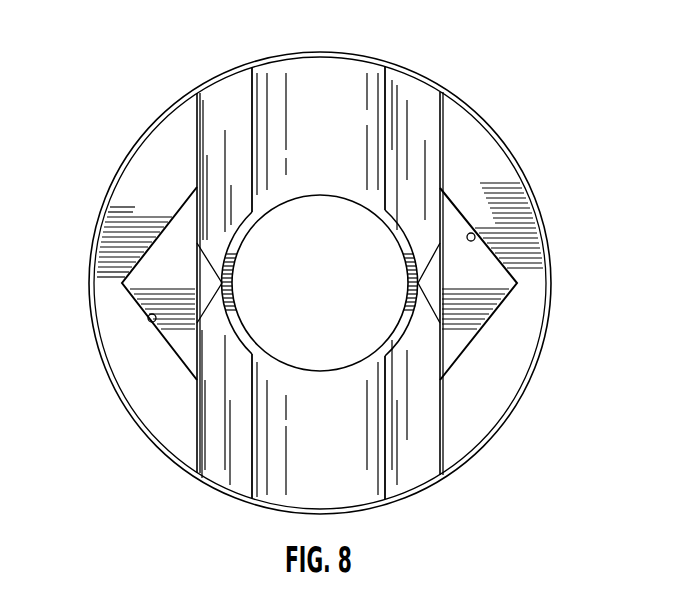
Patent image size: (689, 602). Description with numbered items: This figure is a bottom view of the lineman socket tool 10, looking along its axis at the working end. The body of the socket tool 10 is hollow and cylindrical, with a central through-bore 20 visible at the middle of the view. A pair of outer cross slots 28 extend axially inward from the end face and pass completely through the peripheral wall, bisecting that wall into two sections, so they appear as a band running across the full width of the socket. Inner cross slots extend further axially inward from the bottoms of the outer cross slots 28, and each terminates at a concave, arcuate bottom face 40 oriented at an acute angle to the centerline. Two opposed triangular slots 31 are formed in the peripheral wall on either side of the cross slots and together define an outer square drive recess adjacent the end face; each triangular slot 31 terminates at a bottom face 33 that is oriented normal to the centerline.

The socket tool 10 is at (548, 73).
The central through-bore 20 is at (334, 295).
The outer cross slots 28 is at (413, 111).
The triangular slots 31 is at (150, 319).
The bottom face 33 is at (180, 238).
The bottom face 40 is at (357, 460).